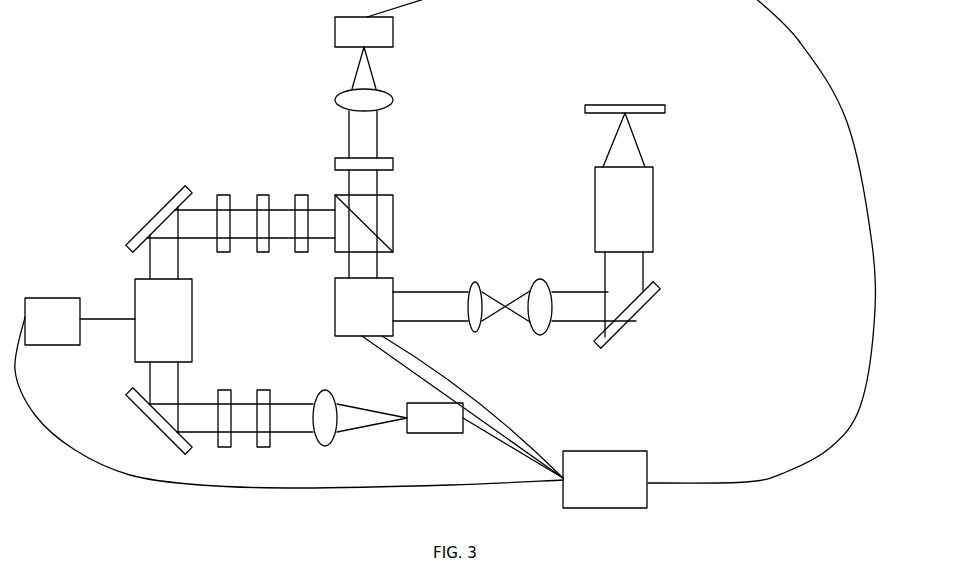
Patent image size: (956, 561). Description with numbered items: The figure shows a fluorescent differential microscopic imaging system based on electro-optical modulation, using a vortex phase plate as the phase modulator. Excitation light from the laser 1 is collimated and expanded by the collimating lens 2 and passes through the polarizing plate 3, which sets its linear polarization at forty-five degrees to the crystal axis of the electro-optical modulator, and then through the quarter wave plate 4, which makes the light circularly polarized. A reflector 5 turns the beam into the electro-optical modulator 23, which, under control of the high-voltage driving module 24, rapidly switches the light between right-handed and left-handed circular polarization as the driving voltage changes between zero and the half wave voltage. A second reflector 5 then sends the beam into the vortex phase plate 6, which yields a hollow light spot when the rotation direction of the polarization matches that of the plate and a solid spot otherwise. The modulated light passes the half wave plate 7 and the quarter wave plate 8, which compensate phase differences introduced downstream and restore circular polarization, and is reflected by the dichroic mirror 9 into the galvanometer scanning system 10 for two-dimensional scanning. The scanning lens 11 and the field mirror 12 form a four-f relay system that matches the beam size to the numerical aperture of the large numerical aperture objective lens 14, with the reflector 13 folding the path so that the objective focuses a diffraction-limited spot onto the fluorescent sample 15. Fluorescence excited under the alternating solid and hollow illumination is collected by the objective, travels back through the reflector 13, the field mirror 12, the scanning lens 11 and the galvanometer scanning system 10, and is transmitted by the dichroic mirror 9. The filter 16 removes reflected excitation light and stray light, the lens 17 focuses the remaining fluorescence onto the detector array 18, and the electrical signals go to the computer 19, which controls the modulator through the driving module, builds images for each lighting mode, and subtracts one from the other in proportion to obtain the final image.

The laser 1 is at (435, 408).
The collimating lens 2 is at (325, 407).
The polarizing plate 3 is at (263, 408).
The ¼ wave plate 4 is at (224, 408).
The reflector 5 is at (159, 320).
The 0-to-2π vortex phase plate 6 is at (220, 212).
The ½ wave plate 7 is at (262, 212).
The ¼ wave plate 8 is at (301, 212).
The dichroic mirror 9 is at (372, 223).
The galvanometer scanning system 10 is at (353, 307).
The scanning lens 11 is at (475, 296).
The field mirror 12 is at (540, 295).
The reflector 13 is at (627, 315).
The large numerical aperture objective lens 14 is at (638, 182).
The sample 15 is at (639, 112).
The filter 16 is at (377, 165).
The lens 17 is at (376, 100).
The detector array 18 is at (378, 53).
The computer 19 is at (605, 467).
The electro-optical modulator 23 is at (179, 320).
The high-voltage driving module 24 is at (52, 310).